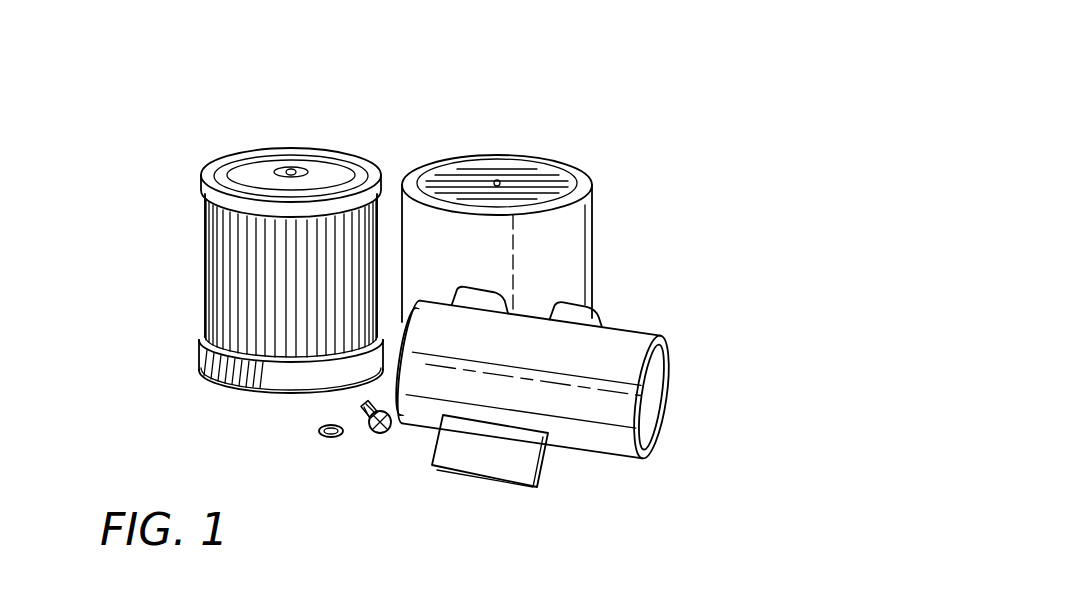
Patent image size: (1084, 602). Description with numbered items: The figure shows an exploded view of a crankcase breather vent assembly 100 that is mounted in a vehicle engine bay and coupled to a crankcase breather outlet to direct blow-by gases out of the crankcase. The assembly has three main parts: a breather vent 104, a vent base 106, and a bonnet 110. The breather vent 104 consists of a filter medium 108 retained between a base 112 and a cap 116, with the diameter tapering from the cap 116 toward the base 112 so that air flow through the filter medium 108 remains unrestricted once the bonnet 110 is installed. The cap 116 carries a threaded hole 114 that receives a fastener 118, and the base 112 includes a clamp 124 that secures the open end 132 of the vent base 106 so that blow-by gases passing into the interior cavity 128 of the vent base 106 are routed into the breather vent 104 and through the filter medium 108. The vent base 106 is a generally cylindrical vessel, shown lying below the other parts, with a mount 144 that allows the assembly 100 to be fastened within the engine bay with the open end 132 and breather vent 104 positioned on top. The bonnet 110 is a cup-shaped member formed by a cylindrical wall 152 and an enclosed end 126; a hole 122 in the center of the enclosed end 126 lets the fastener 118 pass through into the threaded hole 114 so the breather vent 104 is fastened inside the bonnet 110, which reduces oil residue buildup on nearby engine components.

The crankcase breather vent assembly 100 is at (487, 72).
The breather vent 104 is at (222, 137).
The vent base 106 is at (595, 470).
The filter medium 108 is at (213, 260).
The bonnet 110 is at (578, 155).
The base 112 is at (208, 342).
The threaded hole 114 is at (291, 170).
The cap 116 is at (208, 200).
The fastener 118 is at (377, 432).
The hole 122 is at (497, 183).
The clamp 124 is at (235, 377).
The enclosed end 126 is at (443, 160).
The interior cavity 128 is at (647, 398).
The open end 132 is at (665, 355).
The mount 144 is at (478, 470).
The cylindrical wall 152 is at (575, 253).